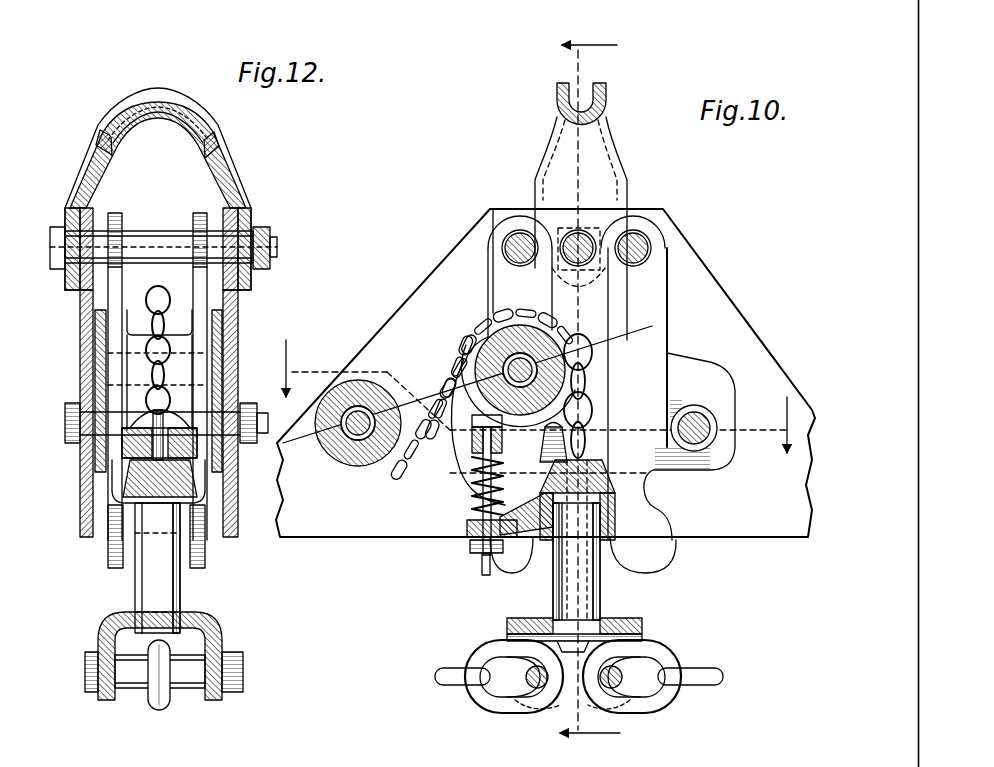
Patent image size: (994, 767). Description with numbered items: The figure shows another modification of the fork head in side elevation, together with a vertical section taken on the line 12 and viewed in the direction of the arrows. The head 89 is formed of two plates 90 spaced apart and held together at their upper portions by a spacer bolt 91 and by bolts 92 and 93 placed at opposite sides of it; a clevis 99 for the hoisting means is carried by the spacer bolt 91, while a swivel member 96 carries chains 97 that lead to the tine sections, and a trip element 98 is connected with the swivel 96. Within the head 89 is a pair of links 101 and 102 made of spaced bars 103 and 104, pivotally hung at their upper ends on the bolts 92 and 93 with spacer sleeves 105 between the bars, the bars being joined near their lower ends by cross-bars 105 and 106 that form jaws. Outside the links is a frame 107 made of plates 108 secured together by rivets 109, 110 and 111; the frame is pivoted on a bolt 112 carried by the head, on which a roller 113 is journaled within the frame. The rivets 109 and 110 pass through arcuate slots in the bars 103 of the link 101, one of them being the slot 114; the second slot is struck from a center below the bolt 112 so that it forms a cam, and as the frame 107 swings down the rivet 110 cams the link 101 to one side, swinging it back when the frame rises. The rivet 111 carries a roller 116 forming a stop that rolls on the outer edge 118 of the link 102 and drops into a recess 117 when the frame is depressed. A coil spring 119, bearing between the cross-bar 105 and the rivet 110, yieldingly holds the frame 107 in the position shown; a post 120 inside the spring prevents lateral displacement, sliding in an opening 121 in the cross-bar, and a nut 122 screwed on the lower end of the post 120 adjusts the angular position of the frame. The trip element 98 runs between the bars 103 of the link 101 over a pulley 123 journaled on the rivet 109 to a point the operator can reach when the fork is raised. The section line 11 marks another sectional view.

In FIG. 12, the section line 11- 11 is at (322, 368).
In FIG. 10, the section line 11- 11 is at (798, 425).
In FIG. 10, the section line 12- 12 is at (590, 391).
In FIG. 12, the head 89 is at (232, 203).
In FIG. 10, the head 89 is at (500, 276).
In FIG. 12, the plates 90 is at (78, 300).
In FIG. 10, the plates 90 is at (692, 260).
In FIG. 12, the spacer bolt 91 is at (110, 214).
In FIG. 10, the spacer bolt 91 is at (585, 243).
In FIG. 10, the bolt 92 is at (518, 246).
In FIG. 10, the bolt 93 is at (640, 243).
In FIG. 12, the swivel member 96 is at (170, 590).
In FIG. 10, the swivel member 96 is at (597, 592).
In FIG. 12, the chains 97 is at (155, 690).
In FIG. 10, the chains 97 is at (690, 660).
In FIG. 12, the trip element 98 is at (155, 297).
In FIG. 10, the trip element 98 is at (590, 394).
In FIG. 12, the clevis 99 is at (145, 128).
In FIG. 10, the clevis 99 is at (604, 140).
In FIG. 12, the link 101 is at (118, 212).
In FIG. 10, the link 101 is at (507, 275).
In FIG. 10, the link 102 is at (648, 300).
In FIG. 12, the bars 103 is at (125, 222).
In FIG. 10, the bars 103 is at (502, 299).
In FIG. 10, the bars 104 is at (652, 326).
In FIG. 12, the spacer sleeves / cross-bar 105 is at (113, 530).
In FIG. 10, the spacer sleeves / cross-bar 105 is at (505, 240).
In FIG. 10, the cross-bar 106 is at (615, 523).
In FIG. 10, the frame 107 is at (685, 372).
In FIG. 12, the plates 108 is at (97, 332).
In FIG. 10, the plates 108 is at (725, 375).
In FIG. 10, the rivet 109 is at (560, 343).
In FIG. 12, the rivet 110 is at (130, 445).
In FIG. 10, the rivet 110 is at (502, 440).
In FIG. 10, the rivet 111 is at (710, 410).
In FIG. 12, the bolt 112 is at (68, 428).
In FIG. 10, the bolt 112 is at (350, 430).
In FIG. 10, the roller 113 is at (337, 380).
In FIG. 10, the arcuate slot 114 is at (560, 360).
In FIG. 10, the roller 116 is at (710, 424).
In FIG. 10, the recess 117 is at (648, 488).
In FIG. 10, the outer edge 118 is at (672, 388).
In FIG. 10, the coil spring 119 is at (472, 492).
In FIG. 10, the post 120 is at (488, 560).
In FIG. 10, the opening 121 is at (517, 533).
In FIG. 10, the nut 122 is at (475, 540).
In FIG. 12, the pulley 123 is at (183, 343).
In FIG. 10, the pulley 123 is at (452, 365).